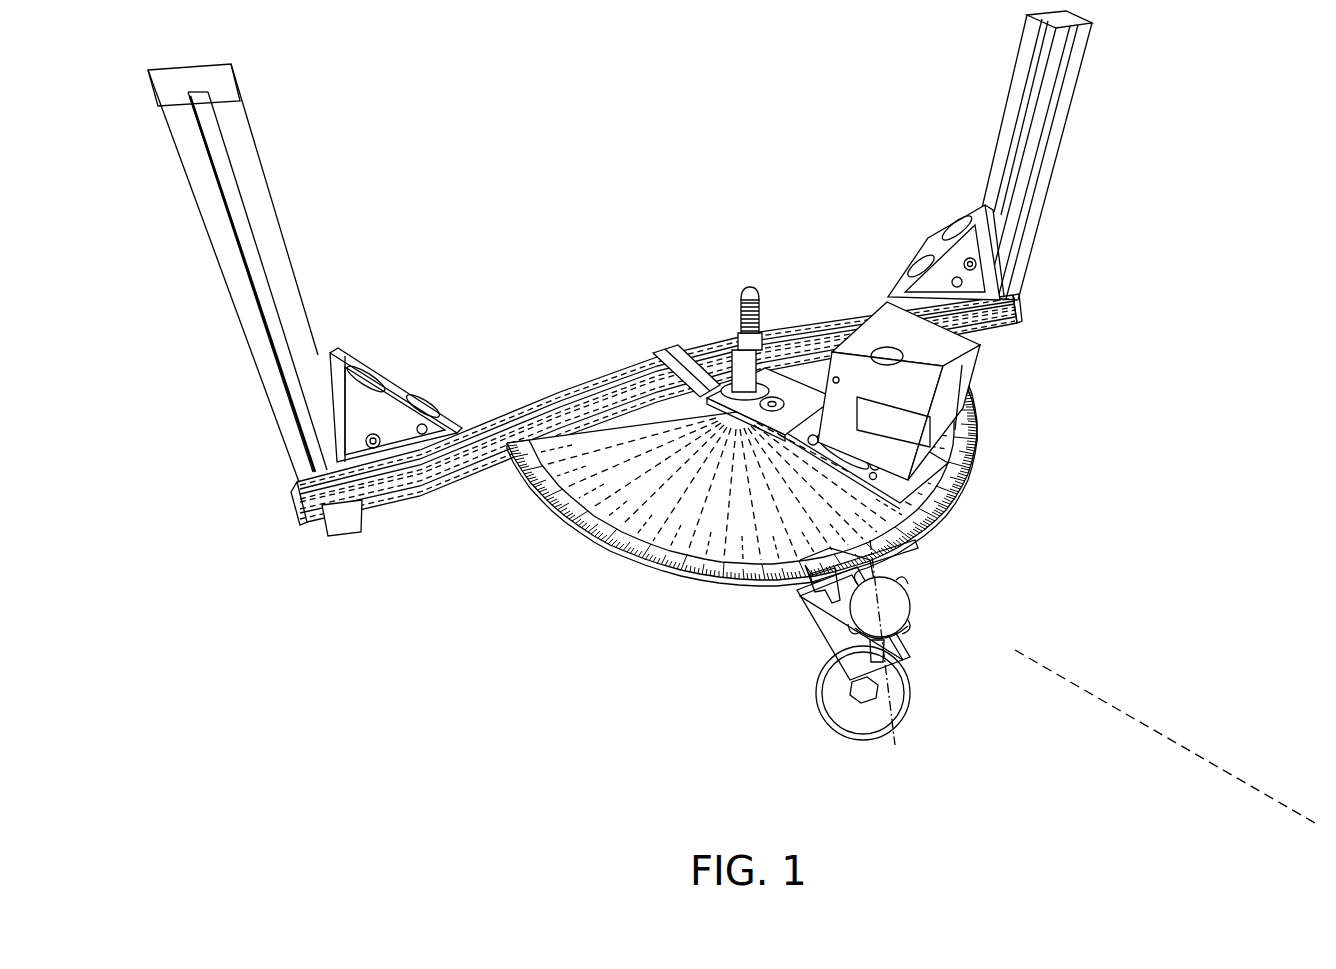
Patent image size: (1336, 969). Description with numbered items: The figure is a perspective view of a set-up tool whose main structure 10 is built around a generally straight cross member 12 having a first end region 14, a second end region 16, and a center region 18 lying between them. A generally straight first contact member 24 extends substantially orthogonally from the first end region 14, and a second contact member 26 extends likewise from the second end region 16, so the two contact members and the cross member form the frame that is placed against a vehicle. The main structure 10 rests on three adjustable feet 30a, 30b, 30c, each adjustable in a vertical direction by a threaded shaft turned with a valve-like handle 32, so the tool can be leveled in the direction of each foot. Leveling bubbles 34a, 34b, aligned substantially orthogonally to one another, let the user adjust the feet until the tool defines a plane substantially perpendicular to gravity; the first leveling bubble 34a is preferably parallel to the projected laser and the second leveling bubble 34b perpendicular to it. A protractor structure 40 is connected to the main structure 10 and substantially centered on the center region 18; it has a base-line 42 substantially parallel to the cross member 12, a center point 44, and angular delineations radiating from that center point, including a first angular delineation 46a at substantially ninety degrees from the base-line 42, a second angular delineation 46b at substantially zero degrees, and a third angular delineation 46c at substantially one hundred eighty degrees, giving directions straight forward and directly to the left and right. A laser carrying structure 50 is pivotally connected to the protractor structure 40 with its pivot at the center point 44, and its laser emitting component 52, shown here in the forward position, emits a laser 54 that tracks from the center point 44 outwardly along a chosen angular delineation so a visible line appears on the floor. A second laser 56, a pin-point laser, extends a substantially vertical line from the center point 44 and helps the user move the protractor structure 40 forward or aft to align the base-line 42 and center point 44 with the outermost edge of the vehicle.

The main structure 10 is at (553, 291).
The cross member 12 is at (667, 416).
The first end region 14 is at (330, 525).
The second end region 16 is at (1014, 302).
The center region 18 is at (562, 385).
The first contact member 24 is at (255, 300).
The second contact member 26 is at (1046, 170).
The adjustable foot 30a is at (820, 693).
The adjustable foot 30b is at (278, 497).
The adjustable foot 30c is at (936, 238).
The handle 32 is at (902, 603).
The first leveling bubble 34a is at (841, 452).
The second leveling bubble 34b is at (808, 365).
The protractor structure 40 is at (783, 492).
The base-line 42 is at (604, 428).
The center point 44 is at (718, 392).
The first angular delineation 46a is at (894, 722).
The second angular delineation 46b is at (642, 540).
The third angular delineation 46c is at (985, 456).
The laser carrying structure 50 is at (714, 410).
The laser emitting component 52 is at (942, 425).
The laser 54 is at (1183, 742).
The second laser 56 is at (745, 312).